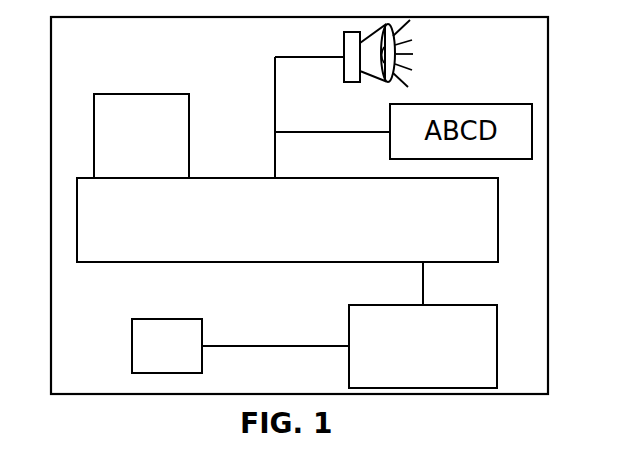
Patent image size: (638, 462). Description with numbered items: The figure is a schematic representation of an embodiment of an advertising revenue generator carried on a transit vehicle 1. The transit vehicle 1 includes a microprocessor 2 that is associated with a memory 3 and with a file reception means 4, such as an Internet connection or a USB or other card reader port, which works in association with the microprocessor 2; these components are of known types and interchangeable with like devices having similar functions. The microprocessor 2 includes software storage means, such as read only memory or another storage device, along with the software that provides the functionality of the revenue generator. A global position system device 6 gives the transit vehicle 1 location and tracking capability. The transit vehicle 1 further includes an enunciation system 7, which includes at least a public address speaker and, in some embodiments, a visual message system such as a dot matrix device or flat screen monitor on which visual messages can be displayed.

The transit vehicle 1 is at (142, 56).
The microprocessor 2 is at (478, 343).
The memory 3 is at (478, 211).
The file reception means 4 is at (113, 107).
The global position system (GPS) device 6 is at (152, 356).
The enunciation system 7 is at (423, 33).